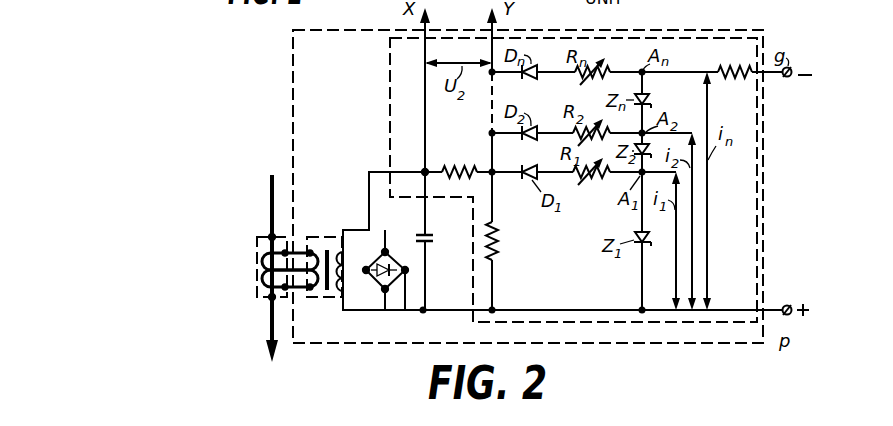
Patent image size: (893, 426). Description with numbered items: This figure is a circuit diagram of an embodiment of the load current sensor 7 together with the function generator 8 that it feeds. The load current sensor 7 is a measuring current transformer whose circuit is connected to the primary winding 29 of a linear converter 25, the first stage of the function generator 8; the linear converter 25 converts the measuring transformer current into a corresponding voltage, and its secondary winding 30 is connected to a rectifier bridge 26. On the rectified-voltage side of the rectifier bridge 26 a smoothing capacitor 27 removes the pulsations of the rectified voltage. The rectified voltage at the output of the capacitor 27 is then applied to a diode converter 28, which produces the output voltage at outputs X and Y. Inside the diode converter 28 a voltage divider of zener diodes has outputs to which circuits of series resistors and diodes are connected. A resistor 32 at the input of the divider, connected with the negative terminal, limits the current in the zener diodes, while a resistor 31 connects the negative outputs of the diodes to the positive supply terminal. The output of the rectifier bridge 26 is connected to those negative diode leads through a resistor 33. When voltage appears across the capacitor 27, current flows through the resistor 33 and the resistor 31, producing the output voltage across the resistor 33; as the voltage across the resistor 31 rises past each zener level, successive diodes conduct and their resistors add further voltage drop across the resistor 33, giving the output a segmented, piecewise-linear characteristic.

The load current sensor 7 is at (257, 273).
The function generator 8 is at (291, 69).
The linear converter 25 is at (334, 214).
The rectifier bridge 26 is at (396, 254).
The capacitor 27 is at (435, 239).
The diode converter 28 is at (389, 125).
The primary winding 29 is at (318, 296).
The secondary winding 30 is at (340, 294).
The resistor 31 is at (497, 233).
The resistor 32 is at (746, 67).
The resistor 33 is at (467, 165).